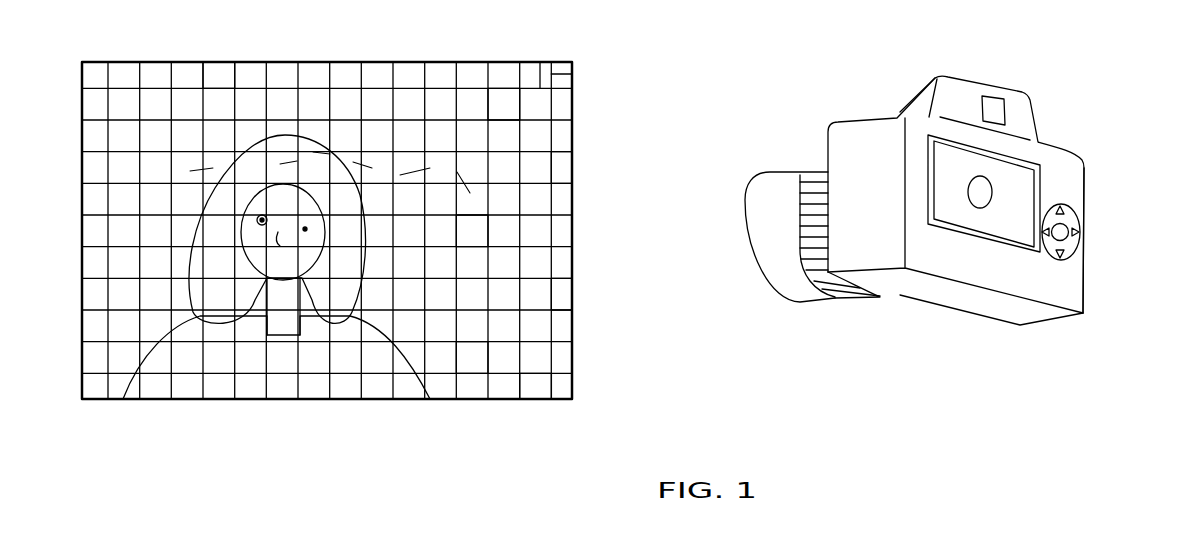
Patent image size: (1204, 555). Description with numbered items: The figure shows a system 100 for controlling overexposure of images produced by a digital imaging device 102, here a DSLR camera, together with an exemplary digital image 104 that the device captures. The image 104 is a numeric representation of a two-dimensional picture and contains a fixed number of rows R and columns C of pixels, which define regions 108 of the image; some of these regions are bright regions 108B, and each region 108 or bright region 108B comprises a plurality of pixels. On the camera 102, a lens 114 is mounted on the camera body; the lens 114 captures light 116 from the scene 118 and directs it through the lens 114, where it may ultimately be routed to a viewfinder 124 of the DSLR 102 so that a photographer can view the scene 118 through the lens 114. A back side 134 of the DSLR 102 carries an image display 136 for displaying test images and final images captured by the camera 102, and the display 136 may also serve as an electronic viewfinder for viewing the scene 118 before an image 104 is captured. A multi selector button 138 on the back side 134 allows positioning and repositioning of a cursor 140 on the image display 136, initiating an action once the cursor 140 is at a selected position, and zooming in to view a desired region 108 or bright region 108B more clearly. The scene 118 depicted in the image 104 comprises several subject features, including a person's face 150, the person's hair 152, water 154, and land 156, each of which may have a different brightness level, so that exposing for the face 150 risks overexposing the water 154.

The system 100 is at (963, 190).
The digital imaging device 102 is at (963, 223).
The digital image 104 is at (62, 276).
The region 108 is at (533, 386).
The bright region 108B is at (223, 74).
The lens 114 is at (810, 303).
The light 116 is at (937, 303).
The scene 118 is at (458, 378).
The viewfinder 124 is at (1000, 118).
The back side 134 is at (1068, 294).
The image display 136 is at (995, 237).
The multi selector button 138 is at (1070, 214).
The cursor 140 is at (273, 240).
The person's face 150 is at (238, 236).
The person's hair 152 is at (343, 292).
The water 154 is at (562, 298).
The land 156 is at (562, 176).
The columns C is at (540, 57).
The rows R is at (578, 76).